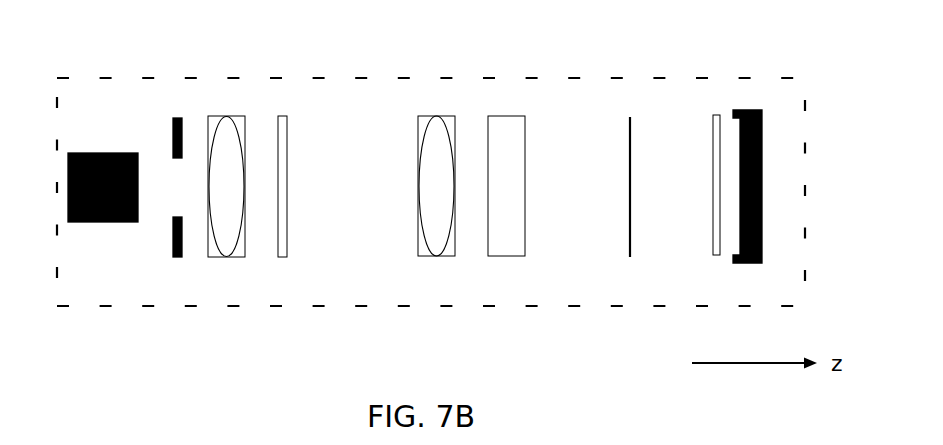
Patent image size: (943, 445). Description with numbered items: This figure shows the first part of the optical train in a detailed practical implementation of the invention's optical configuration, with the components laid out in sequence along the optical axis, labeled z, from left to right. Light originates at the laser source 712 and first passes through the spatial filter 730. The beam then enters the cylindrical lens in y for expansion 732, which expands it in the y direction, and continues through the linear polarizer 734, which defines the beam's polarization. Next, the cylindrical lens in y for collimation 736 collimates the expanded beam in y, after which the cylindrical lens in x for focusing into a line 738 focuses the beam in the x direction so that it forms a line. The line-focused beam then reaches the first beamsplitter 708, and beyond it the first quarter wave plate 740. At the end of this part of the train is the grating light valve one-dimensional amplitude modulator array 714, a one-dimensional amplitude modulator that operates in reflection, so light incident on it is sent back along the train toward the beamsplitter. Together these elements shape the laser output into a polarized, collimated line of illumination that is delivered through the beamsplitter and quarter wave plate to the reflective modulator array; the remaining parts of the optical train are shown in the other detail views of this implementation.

The laser source 712 is at (107, 222).
The spatial filter 730 is at (173, 242).
The cylindrical lens in y for expansion 732 is at (225, 240).
The linear polarizer 734 is at (280, 240).
The cylindrical lens in y for collimation 736 is at (435, 238).
The cylindrical lens in x for focusing into a line 738 is at (507, 237).
The first beamsplitter 708 is at (630, 238).
The first quarter wave plate 740 is at (713, 240).
The grating light valve 1-D amplitude modulator array 714 is at (758, 110).